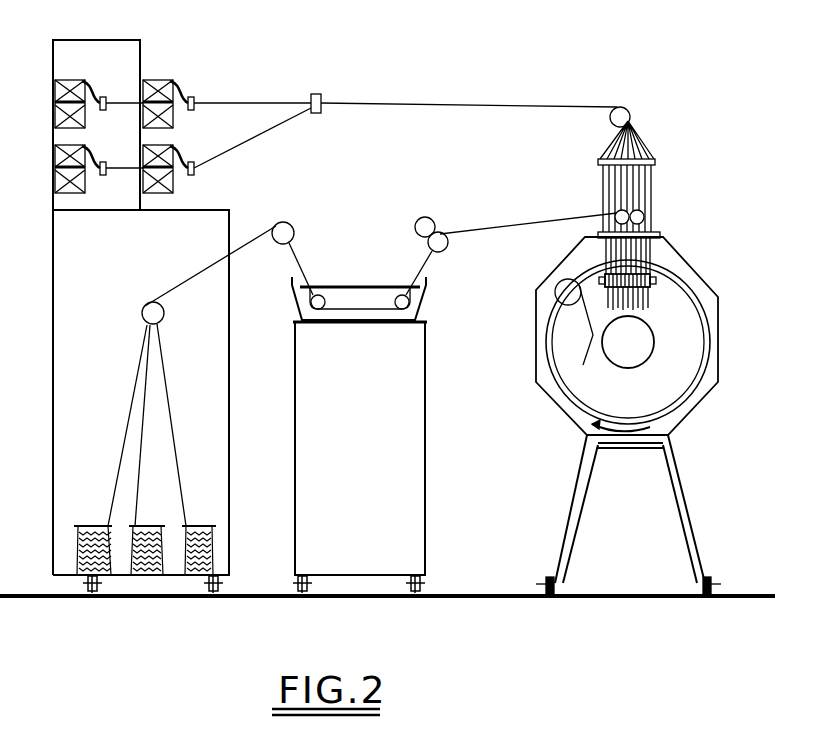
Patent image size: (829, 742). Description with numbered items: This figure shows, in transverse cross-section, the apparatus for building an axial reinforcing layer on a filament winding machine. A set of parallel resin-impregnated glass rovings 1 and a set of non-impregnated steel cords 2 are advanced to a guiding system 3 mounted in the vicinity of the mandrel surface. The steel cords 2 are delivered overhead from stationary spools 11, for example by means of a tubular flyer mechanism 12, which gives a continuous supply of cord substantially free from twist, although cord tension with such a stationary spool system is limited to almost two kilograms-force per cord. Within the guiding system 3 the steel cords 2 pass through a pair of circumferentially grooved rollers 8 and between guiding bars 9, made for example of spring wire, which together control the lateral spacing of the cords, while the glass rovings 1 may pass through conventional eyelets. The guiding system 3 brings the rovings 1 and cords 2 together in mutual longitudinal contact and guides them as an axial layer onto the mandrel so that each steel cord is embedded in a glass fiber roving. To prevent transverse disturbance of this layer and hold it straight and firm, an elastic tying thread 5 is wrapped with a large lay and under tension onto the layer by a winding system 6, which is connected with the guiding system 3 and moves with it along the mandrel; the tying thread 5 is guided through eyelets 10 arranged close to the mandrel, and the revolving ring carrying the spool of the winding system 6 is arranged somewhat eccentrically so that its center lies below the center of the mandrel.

The resin-impregnated glass rovings 1 is at (479, 226).
The non-impregnated steel cords 2 is at (418, 103).
The guiding system 3 is at (690, 268).
The elastic tying thread 5 is at (583, 365).
The winding system 6 is at (555, 293).
The grooved rollers 8 is at (603, 268).
The guiding bars 9 is at (643, 310).
The eyelets 10 is at (602, 276).
The stationary spools 11 is at (150, 95).
The tubular flyer mechanism 12 is at (186, 100).